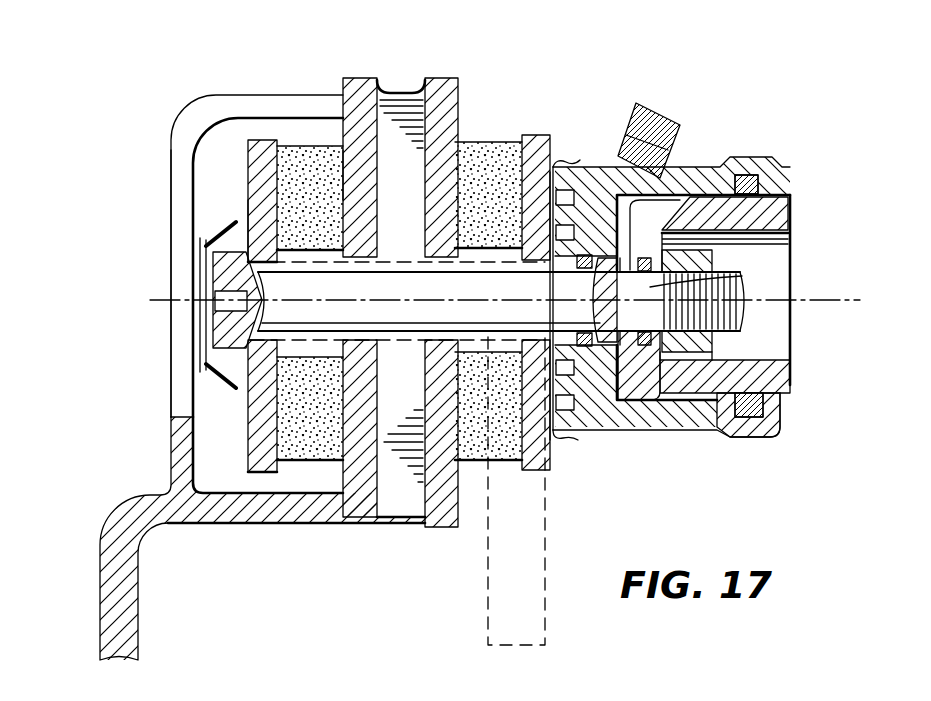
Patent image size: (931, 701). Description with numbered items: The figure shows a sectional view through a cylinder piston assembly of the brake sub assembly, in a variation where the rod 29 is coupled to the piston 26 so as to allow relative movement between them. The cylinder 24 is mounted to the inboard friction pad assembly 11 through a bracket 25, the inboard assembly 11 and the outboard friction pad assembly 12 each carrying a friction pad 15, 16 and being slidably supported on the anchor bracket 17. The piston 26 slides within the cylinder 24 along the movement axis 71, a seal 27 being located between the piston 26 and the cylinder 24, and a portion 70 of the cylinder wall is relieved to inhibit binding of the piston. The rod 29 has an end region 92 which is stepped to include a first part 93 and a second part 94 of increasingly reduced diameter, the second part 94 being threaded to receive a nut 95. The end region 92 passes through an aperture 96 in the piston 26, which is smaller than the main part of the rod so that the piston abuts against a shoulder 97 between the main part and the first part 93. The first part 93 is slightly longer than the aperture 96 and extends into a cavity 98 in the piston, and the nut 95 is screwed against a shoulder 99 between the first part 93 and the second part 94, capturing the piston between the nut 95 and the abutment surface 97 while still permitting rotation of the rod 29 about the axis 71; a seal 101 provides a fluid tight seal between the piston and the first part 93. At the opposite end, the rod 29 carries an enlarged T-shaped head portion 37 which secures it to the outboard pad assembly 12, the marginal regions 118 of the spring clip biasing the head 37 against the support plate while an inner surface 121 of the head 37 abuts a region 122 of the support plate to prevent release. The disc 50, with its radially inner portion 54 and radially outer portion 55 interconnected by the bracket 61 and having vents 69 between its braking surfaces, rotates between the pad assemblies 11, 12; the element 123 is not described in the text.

The inboard friction pad assembly 11 is at (546, 124).
The outboard friction pad assembly 12 is at (248, 104).
The friction pad 15 is at (478, 165).
The friction pad 16 is at (290, 145).
The anchor bracket 17 is at (558, 588).
The cylinder 24 is at (692, 163).
The bracket 25 is at (572, 430).
The piston 26 is at (788, 383).
The seal 27 is at (748, 176).
The rod 29 is at (390, 302).
The head portion 37 is at (215, 278).
The disc 50 is at (404, 60).
The radially inner portion 54 is at (440, 527).
The radially outer portion 55 is at (392, 92).
The bracket 61 is at (176, 157).
The vents 69 is at (377, 168).
The relieved portion 70 is at (638, 405).
The movement axis 71 is at (826, 300).
The end region 92 is at (756, 352).
The first part 93 is at (715, 285).
The second part 94 is at (735, 308).
The nut 95 is at (718, 357).
The aperture 96 is at (607, 265).
The shoulder 97 is at (600, 320).
The cavity 98 is at (782, 246).
The shoulder 99 is at (668, 362).
The seal 101 is at (645, 258).
The marginal regions 118 is at (205, 246).
The inner surface 121 is at (279, 234).
The region 122 is at (276, 391).
The slot 123 is at (225, 312).